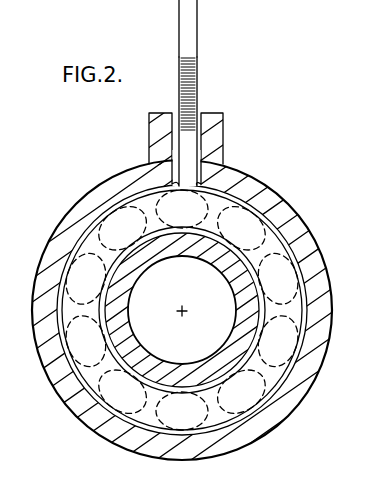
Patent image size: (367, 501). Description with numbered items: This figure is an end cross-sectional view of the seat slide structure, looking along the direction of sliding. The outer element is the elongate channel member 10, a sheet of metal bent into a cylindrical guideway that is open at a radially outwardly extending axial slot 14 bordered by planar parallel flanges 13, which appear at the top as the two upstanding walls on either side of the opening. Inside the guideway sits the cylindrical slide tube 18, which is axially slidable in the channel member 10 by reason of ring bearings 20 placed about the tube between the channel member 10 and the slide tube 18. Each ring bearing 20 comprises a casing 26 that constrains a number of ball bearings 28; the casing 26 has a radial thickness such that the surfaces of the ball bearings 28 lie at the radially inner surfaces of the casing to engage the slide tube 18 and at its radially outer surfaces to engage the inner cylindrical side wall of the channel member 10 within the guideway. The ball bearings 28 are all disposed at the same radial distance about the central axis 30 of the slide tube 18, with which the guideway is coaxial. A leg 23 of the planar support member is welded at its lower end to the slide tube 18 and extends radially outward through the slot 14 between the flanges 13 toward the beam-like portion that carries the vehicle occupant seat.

The channel member 10 is at (72, 198).
The flanges 13 is at (149, 132).
The axial slot 14 is at (202, 102).
The slide tube 18 is at (245, 303).
The ring bearing 20 is at (243, 227).
The legs 23 is at (197, 18).
The casing 26 is at (294, 281).
The ball bearings 28 is at (313, 335).
The central axis 30 is at (184, 306).